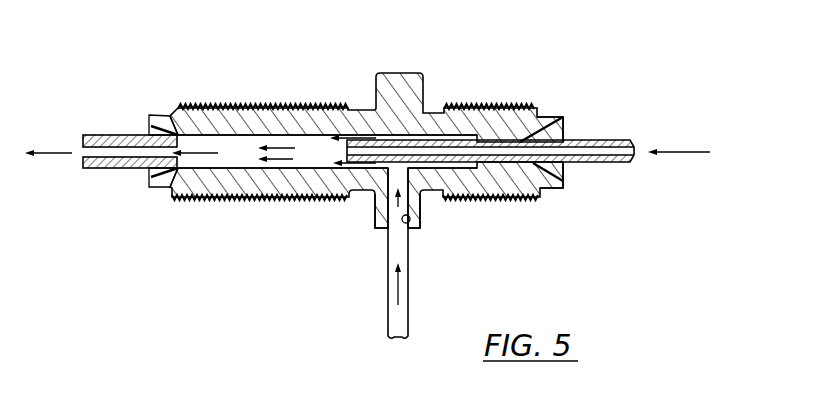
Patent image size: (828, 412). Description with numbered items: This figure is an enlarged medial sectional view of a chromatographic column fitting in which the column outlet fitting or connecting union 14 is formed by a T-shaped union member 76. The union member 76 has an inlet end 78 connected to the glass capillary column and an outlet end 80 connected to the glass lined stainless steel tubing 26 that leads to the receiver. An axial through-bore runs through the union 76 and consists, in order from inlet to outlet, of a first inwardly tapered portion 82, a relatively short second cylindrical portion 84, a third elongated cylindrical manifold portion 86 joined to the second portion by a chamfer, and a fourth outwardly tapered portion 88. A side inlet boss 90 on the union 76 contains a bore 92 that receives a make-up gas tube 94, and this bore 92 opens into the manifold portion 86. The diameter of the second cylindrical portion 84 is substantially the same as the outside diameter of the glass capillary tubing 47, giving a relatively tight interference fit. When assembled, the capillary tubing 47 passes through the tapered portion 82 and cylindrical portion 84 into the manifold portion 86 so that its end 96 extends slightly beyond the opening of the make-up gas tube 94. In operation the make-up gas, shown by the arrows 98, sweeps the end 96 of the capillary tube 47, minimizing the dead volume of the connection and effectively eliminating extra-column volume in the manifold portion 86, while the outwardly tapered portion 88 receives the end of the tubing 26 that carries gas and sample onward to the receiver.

The column outlet fitting 14 is at (239, 85).
The glass lined stainless steel tubing 26 is at (113, 170).
The glass capillary tubing 47 is at (600, 164).
The T-shaped union member 76 is at (229, 200).
The inlet end 78 is at (525, 132).
The outlet end 80 is at (166, 184).
The first inwardly tapered portion 82 is at (565, 129).
The second cylindrical portion 84 is at (504, 134).
The manifold portion 86 is at (296, 138).
The fourth outwardly tapered portion 88 is at (147, 127).
The side inlet boss 90 is at (376, 217).
The bore 92 is at (412, 230).
The make-up gas tube 94 is at (388, 295).
The end of glass capillary tube 96 is at (340, 157).
The arrows 98 is at (349, 138).